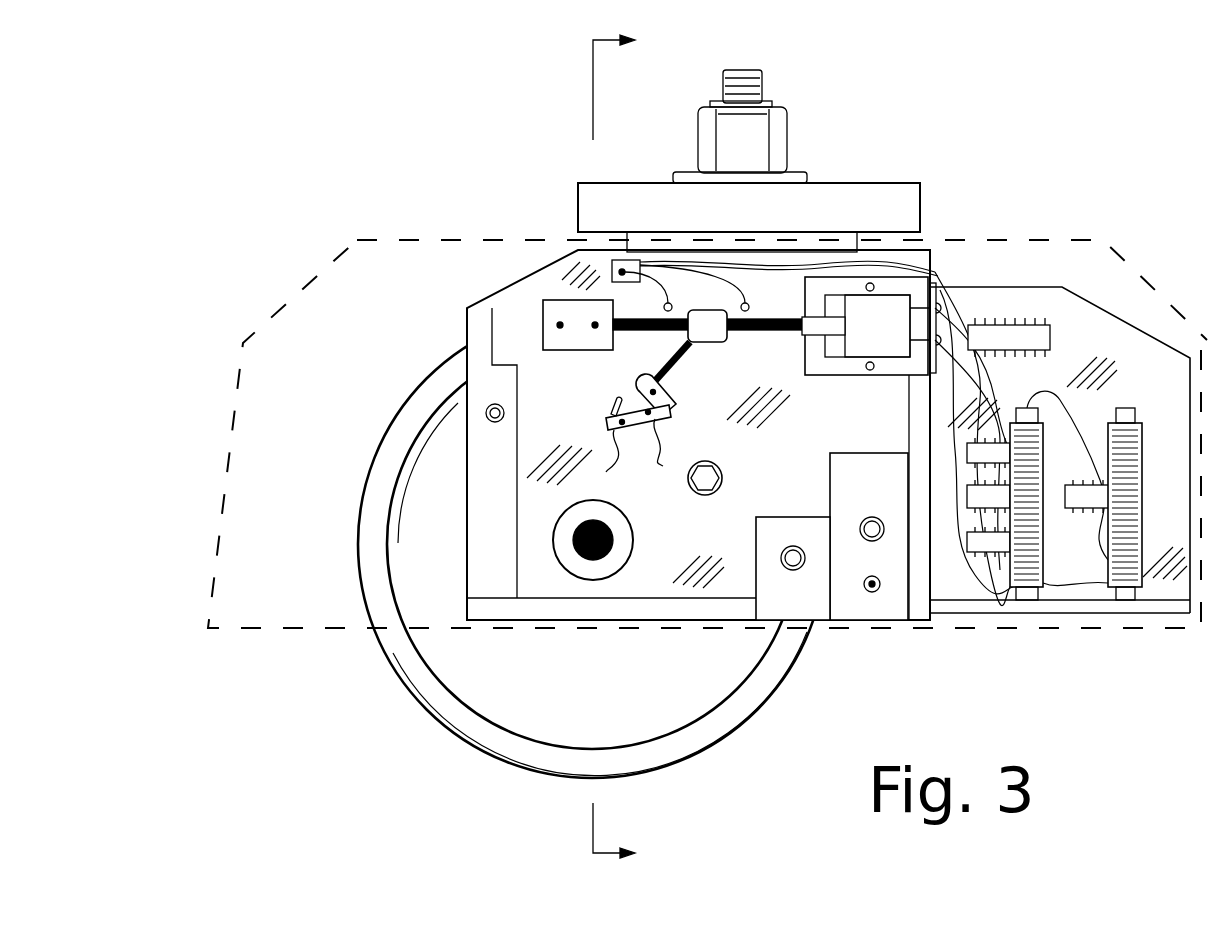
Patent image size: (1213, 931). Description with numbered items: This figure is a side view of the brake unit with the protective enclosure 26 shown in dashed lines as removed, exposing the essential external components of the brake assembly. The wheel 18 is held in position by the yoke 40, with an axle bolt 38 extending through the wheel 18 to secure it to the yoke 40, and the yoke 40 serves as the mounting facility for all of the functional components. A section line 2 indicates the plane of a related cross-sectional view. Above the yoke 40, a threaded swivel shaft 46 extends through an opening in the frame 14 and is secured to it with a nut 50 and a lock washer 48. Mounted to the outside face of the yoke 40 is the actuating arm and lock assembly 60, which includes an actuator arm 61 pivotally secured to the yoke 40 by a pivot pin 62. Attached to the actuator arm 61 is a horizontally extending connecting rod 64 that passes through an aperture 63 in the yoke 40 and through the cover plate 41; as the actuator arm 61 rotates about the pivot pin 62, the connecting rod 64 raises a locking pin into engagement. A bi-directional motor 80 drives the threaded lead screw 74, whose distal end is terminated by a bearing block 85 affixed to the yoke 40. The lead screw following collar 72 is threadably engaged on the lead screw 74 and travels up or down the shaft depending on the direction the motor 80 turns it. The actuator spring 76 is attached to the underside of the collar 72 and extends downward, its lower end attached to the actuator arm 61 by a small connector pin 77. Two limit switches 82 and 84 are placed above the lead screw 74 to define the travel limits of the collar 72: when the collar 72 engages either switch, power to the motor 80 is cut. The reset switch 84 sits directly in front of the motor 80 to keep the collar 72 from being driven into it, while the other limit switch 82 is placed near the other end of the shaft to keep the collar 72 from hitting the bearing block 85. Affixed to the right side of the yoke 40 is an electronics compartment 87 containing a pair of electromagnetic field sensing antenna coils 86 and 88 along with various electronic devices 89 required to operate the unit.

The section line 2- 2 is at (624, 455).
The frame 14 is at (873, 183).
The wheel 18 is at (367, 600).
The protective enclosure 26 is at (235, 414).
The axle bolt 38 is at (633, 543).
The yoke 40 is at (467, 314).
The cover plate 41 is at (687, 723).
The threaded swivel shaft 46 is at (722, 88).
The lock washer 48 is at (925, 245).
The nut 50 is at (788, 145).
The actuating arm and lock assembly 60 is at (598, 426).
The actuator arm 61 is at (665, 468).
The pivot pin 62 is at (652, 415).
The aperture 63 is at (612, 402).
The connecting rod 64 is at (612, 465).
The lead screw following collar 72 is at (714, 342).
The lead screw 74 is at (770, 330).
The actuator spring 76 is at (673, 360).
The connector pin 77 is at (668, 390).
The bi-directional motor 80 is at (860, 376).
The limit switch 82 is at (640, 303).
The reset switch 84 is at (749, 303).
The bearing block 85 is at (542, 318).
The electromagnetic field sensing antenna coil 86 is at (1027, 600).
The electronics compartment 87 is at (1114, 620).
The electromagnetic field sensing antenna coil 88 is at (1142, 500).
The electronic devices 89 is at (1052, 337).